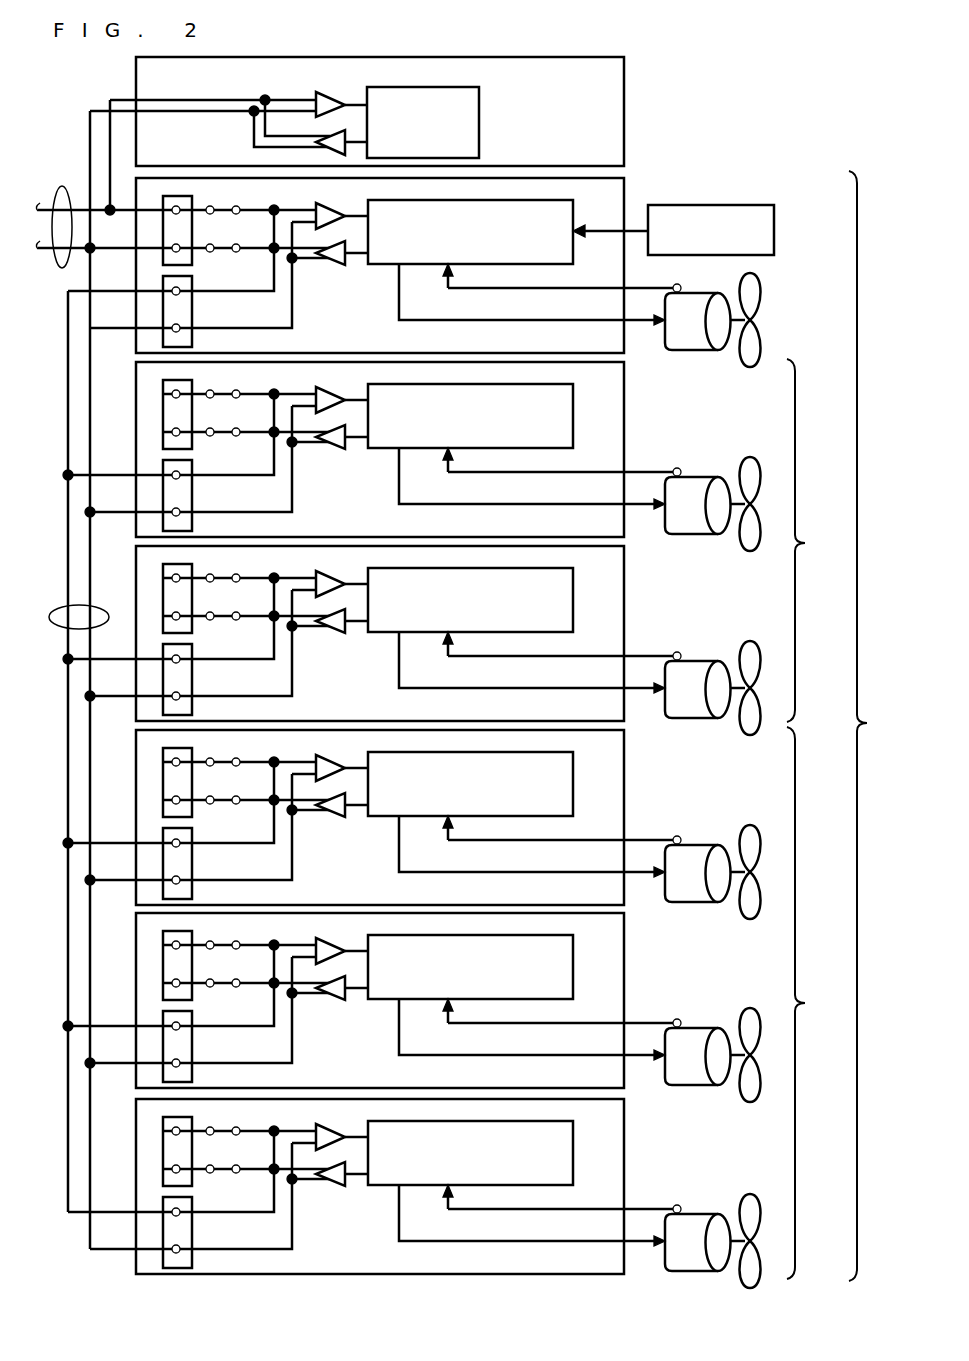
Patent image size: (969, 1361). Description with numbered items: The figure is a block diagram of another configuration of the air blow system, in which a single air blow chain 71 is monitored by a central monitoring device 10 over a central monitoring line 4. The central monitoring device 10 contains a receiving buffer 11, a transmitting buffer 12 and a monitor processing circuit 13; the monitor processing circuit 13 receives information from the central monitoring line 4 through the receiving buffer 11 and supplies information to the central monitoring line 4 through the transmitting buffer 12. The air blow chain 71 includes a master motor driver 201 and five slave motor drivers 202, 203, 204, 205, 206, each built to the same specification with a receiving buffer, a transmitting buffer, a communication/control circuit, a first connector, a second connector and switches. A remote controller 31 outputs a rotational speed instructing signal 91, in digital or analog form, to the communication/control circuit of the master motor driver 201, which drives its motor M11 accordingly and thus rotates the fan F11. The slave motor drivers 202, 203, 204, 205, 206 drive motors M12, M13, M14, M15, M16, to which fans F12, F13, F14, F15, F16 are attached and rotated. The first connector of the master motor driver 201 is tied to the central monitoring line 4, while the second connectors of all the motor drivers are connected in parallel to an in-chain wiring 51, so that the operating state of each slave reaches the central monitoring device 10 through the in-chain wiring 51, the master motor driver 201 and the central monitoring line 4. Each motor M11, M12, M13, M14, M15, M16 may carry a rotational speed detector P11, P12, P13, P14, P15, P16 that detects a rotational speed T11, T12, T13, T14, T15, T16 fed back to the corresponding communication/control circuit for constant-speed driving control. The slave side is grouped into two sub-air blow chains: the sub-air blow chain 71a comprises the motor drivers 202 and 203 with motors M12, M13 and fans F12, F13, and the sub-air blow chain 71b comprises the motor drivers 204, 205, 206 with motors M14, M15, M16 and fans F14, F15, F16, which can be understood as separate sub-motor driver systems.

The central monitoring line 4 is at (63, 185).
The central monitoring device 10 is at (624, 118).
The receiving buffer 11 is at (331, 93).
The transmitting buffer 12 is at (331, 133).
The monitor processing circuit 13 is at (405, 87).
The remote controller 31 is at (746, 203).
The in-chain wiring 51 is at (103, 607).
The air blow chain 71 is at (875, 726).
The sub-air blow chain 71a is at (818, 540).
The sub-air blow chain 71b is at (818, 1003).
The rotational speed instructing signal 91 is at (602, 230).
The motor driver 201 is at (399, 290).
The motor driver 202 is at (412, 475).
The motor driver 203 is at (412, 659).
The motor driver 204 is at (412, 843).
The motor driver 205 is at (412, 1026).
The motor driver 206 is at (414, 1193).
The motor M11 is at (698, 321).
The motor M12 is at (698, 505).
The motor M13 is at (698, 689).
The motor M14 is at (698, 873).
The motor M15 is at (698, 1056).
The motor M16 is at (698, 1242).
The fan F11 is at (735, 339).
The fan F12 is at (735, 523).
The fan F13 is at (735, 707).
The fan F14 is at (735, 891).
The fan F15 is at (735, 1074).
The fan F16 is at (735, 1220).
The rotational speed T11 is at (558, 272).
The rotational speed T12 is at (558, 456).
The rotational speed T13 is at (558, 640).
The rotational speed T14 is at (558, 824).
The rotational speed T15 is at (558, 1007).
The rotational speed T16 is at (558, 1193).
The rotational speed detector P11 is at (700, 274).
The rotational speed detector P12 is at (700, 458).
The rotational speed detector P13 is at (700, 642).
The rotational speed detector P14 is at (700, 826).
The rotational speed detector P15 is at (700, 1009).
The rotational speed detector P16 is at (700, 1195).